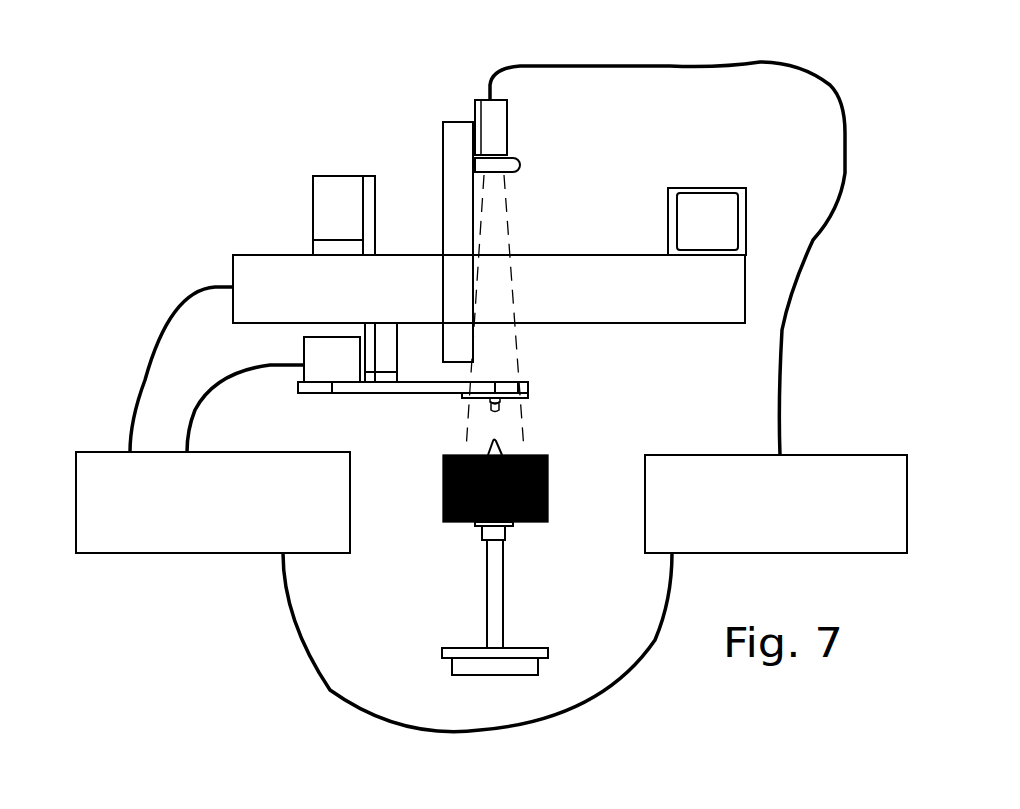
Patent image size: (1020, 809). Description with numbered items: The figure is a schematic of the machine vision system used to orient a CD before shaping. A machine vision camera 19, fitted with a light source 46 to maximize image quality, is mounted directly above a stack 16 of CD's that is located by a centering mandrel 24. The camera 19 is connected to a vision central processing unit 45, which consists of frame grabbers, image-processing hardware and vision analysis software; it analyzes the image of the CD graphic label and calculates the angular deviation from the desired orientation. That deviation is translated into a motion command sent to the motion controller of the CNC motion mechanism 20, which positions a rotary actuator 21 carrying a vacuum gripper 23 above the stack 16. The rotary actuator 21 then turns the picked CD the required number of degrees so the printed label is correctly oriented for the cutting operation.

The stack of CD's 16 is at (548, 461).
The machine vision camera 19 is at (503, 125).
The 4-Axis CNC motion mechanism 20 is at (305, 263).
The rotary actuator 21 is at (318, 358).
The vacuum gripper 23 is at (490, 405).
The centering mandrel 24 is at (497, 625).
The vision central processing unit 45 is at (810, 460).
The light source 46 is at (520, 158).